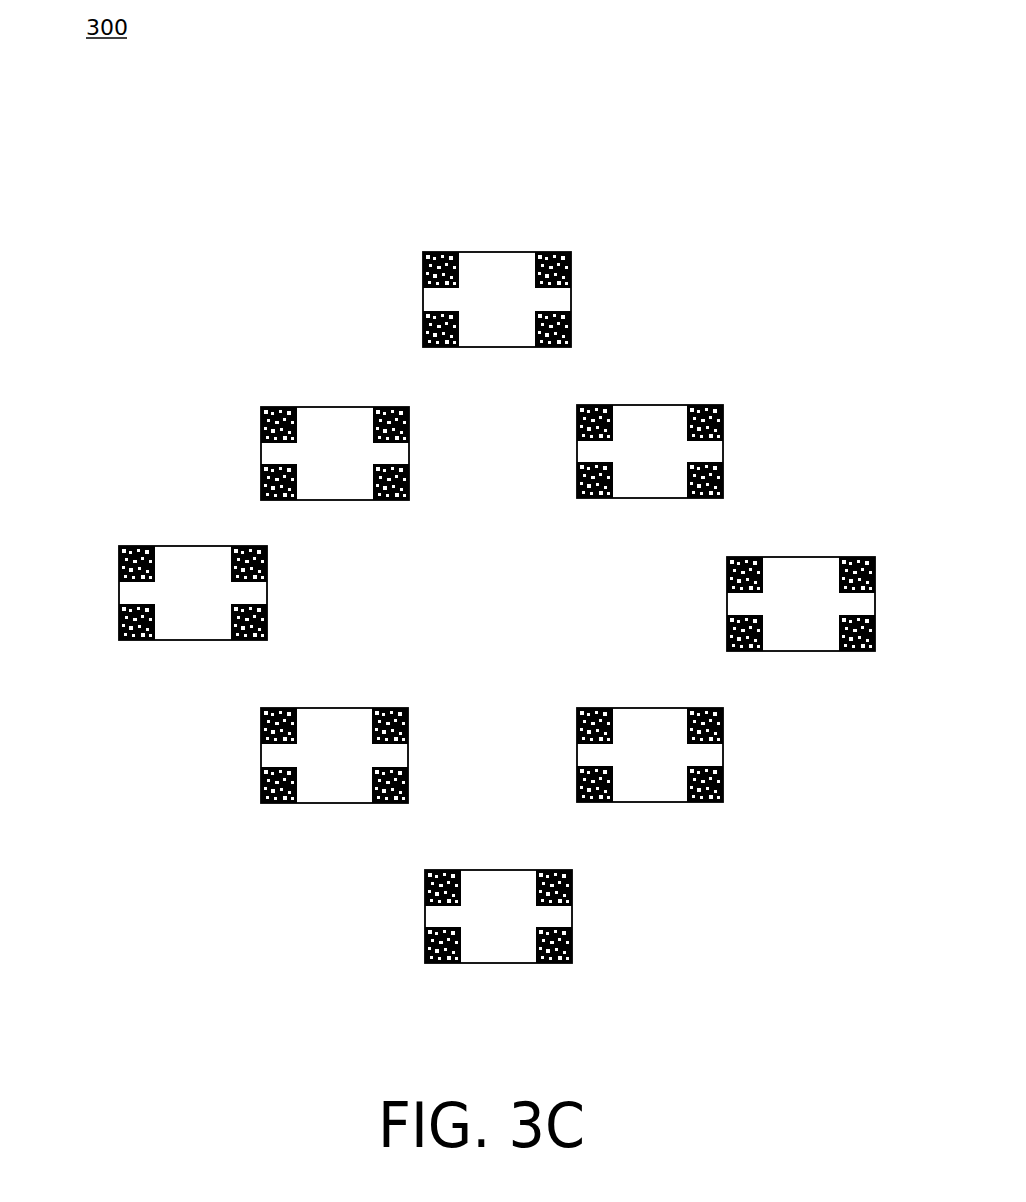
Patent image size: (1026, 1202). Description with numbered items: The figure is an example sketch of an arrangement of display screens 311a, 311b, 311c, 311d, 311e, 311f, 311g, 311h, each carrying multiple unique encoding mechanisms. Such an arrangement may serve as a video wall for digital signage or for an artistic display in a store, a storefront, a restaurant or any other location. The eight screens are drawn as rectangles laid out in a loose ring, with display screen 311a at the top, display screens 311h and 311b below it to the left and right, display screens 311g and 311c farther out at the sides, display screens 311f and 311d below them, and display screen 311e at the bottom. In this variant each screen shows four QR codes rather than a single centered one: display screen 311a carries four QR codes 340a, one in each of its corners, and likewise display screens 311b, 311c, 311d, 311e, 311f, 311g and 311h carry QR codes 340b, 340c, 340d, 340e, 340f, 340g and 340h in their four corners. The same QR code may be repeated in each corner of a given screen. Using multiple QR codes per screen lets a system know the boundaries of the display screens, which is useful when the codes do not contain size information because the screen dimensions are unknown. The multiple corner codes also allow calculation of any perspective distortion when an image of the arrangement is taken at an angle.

The display screen 311a is at (527, 252).
The display screen 311b is at (654, 405).
The display screen 311c is at (800, 557).
The display screen 311d is at (650, 708).
The display screen 311e is at (489, 870).
The display screen 311f is at (343, 708).
The display screen 311g is at (174, 546).
The display screen 311h is at (325, 407).
The QR code 340a is at (424, 261).
The QR code 340b is at (578, 407).
The QR code 340c is at (728, 567).
The QR code 340d is at (767, 818).
The QR code 340e is at (425, 885).
The QR code 340f is at (261, 730).
The QR code 340g is at (119, 560).
The QR code 340h is at (262, 417).